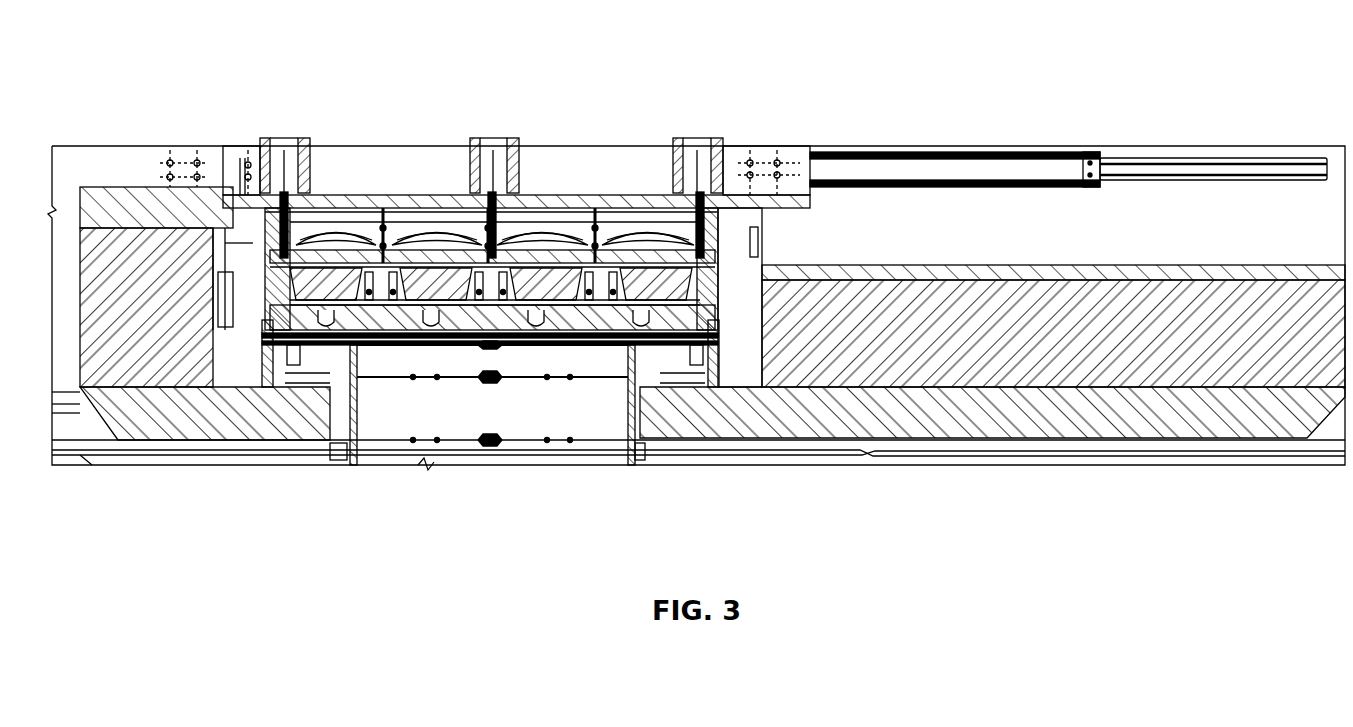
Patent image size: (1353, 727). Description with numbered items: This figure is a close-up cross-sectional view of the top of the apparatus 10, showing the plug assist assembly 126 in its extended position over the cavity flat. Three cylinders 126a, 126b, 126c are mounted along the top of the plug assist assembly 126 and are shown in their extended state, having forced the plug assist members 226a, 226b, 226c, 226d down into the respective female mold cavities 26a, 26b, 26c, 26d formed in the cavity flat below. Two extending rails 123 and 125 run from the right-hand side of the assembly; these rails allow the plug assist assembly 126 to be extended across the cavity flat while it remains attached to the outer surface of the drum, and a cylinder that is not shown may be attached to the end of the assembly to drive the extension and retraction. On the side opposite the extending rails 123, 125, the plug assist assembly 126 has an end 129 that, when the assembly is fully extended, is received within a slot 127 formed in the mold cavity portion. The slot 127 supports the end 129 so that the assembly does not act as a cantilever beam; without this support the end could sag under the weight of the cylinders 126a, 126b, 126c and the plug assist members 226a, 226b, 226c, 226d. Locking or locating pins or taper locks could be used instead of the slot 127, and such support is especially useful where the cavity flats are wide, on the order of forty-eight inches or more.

The antenna assembly 10 is at (1200, 55).
The extending rail 123 is at (1237, 170).
The extending rail 125 is at (985, 158).
The plug assist assembly 126 is at (348, 196).
The cylinder 126a is at (274, 147).
The cylinder 126b is at (487, 147).
The cylinder 126c is at (691, 148).
The slot 127 is at (232, 202).
The end of plug assist assembly 129 is at (236, 196).
The female mold cavity 26a is at (348, 300).
The female mold cavity 26b is at (413, 283).
The female mold cavity 26c is at (538, 300).
The female mold cavity 26d is at (660, 300).
The plug assist member 226a is at (315, 278).
The plug assist member 226b is at (425, 280).
The plug assist member 226c is at (570, 283).
The plug assist member 226d is at (640, 283).